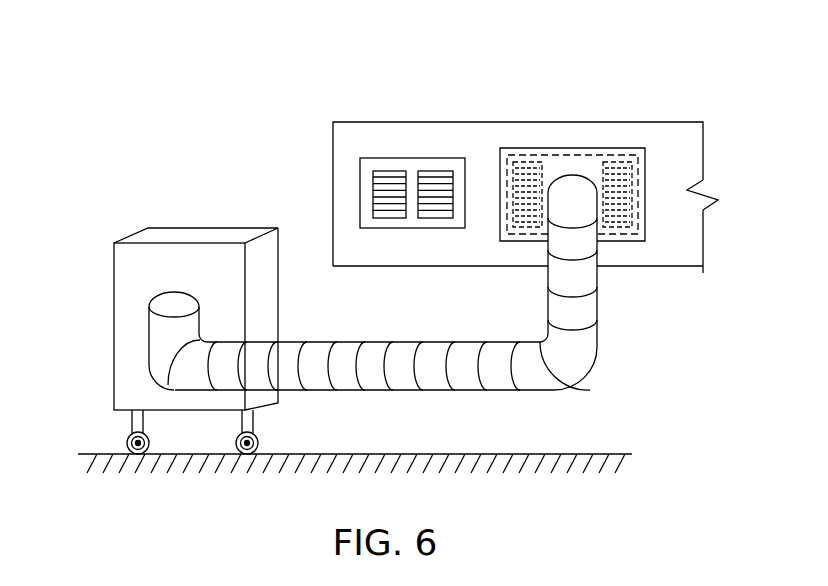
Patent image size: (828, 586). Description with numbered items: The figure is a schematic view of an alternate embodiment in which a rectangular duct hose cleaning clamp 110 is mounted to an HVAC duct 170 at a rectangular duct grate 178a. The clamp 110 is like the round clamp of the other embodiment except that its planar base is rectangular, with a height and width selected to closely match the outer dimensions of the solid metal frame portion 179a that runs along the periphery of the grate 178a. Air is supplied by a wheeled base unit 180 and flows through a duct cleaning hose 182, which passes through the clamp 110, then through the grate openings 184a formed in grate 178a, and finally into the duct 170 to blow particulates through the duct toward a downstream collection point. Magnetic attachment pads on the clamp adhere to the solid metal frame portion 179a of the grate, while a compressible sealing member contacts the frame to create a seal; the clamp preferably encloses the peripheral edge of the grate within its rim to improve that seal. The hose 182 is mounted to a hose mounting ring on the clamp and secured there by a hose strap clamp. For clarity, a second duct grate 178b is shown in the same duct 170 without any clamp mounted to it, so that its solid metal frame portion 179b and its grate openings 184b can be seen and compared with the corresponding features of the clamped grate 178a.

The rectangular duct hose cleaning clamp 110 is at (622, 242).
The HVAC duct 170 is at (537, 123).
The rectangular duct grate 178a is at (535, 161).
The duct grate 178b is at (380, 158).
The solid metal frame portion 179a is at (525, 154).
The solid metal frame portion 179b is at (435, 228).
The grate openings 184a is at (627, 160).
The grate openings 184b is at (433, 171).
The base unit 180 is at (215, 241).
The duct cleaning hose 182 is at (373, 358).